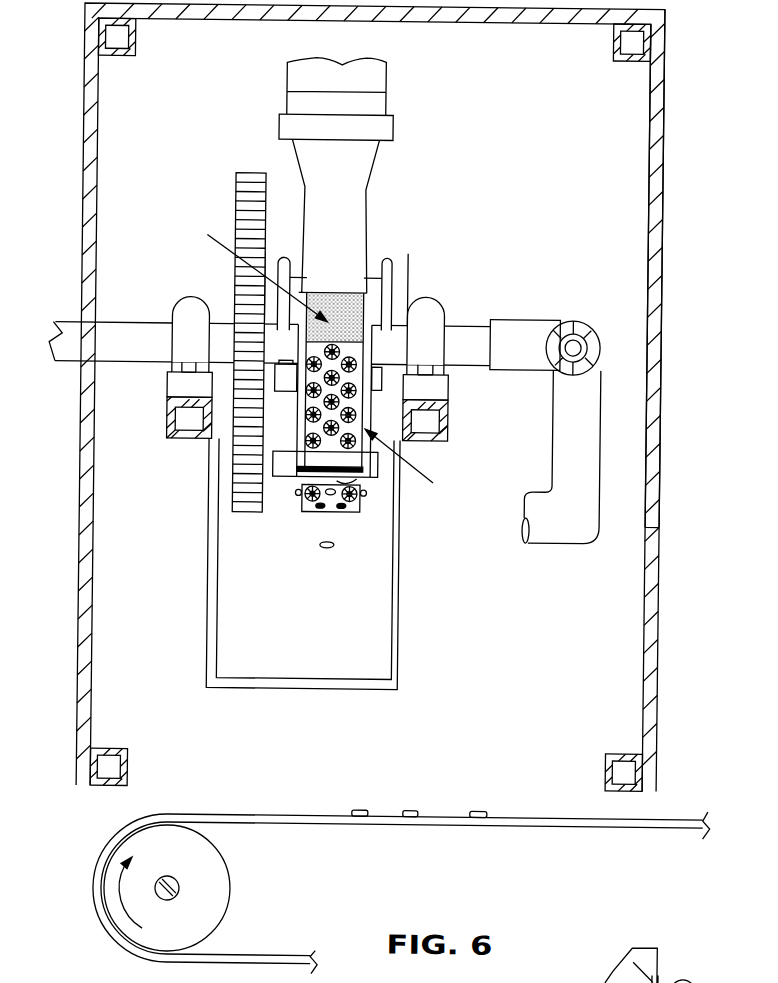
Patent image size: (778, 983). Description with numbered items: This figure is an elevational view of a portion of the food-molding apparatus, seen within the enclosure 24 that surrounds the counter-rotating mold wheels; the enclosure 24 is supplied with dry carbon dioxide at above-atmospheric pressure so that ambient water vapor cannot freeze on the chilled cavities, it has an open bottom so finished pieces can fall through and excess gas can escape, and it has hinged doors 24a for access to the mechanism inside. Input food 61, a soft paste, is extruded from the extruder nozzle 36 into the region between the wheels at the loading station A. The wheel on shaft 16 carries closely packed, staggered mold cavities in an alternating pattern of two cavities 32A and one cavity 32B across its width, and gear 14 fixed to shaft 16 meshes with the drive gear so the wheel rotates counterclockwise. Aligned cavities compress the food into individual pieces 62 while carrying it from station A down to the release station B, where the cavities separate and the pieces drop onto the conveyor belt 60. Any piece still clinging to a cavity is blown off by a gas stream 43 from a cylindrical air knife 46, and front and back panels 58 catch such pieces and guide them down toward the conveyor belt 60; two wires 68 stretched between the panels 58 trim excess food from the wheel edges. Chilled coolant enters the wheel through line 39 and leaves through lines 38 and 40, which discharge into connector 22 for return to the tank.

The gear 14 is at (249, 171).
The shaft 16 is at (270, 303).
The connector 22 is at (512, 327).
The enclosure 24 is at (610, 0).
The hinged doors 24a is at (662, 407).
The mold cavities 32A is at (301, 344).
The mold cavity 32B is at (305, 398).
The extruder nozzle 36 is at (366, 158).
The line 38 is at (541, 530).
The line 39 is at (287, 257).
The line 40 is at (386, 274).
The gas stream 43 is at (671, 977).
The air knife 46 is at (723, 976).
The panels 58 is at (407, 629).
The conveyor belt 60 is at (221, 812).
The input food 61 is at (356, 287).
The molded piece 62 is at (331, 549).
The wires 68 is at (303, 490).
The loading station A is at (256, 272).
The release station B is at (383, 423).